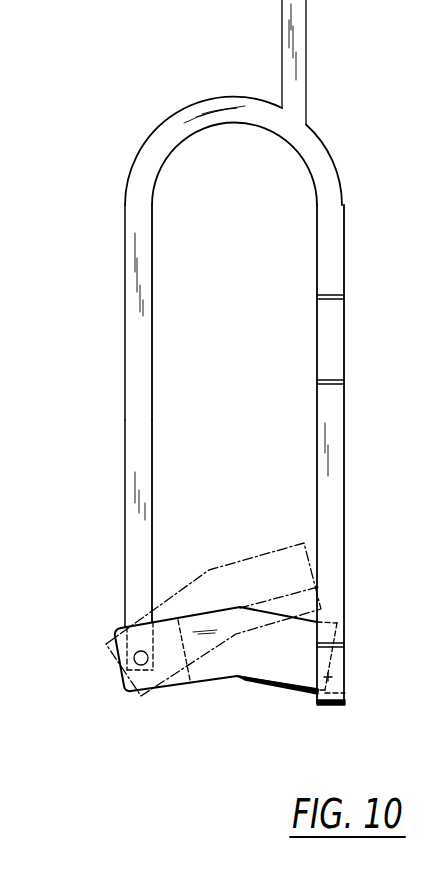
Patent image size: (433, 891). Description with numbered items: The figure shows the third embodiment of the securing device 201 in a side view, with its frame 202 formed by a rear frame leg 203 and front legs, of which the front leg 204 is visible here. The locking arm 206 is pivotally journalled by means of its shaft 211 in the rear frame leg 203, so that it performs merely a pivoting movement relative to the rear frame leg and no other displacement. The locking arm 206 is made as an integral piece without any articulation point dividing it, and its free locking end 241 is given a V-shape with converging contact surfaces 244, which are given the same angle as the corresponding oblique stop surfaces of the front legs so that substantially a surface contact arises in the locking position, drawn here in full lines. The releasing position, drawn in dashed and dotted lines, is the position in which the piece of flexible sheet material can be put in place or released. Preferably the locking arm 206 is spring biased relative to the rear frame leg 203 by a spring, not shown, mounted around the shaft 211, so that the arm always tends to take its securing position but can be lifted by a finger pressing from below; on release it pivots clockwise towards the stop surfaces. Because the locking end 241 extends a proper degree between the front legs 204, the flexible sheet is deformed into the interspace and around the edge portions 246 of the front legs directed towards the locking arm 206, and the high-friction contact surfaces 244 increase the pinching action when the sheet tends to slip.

The securing device 201 is at (114, 404).
The frame 202 is at (118, 287).
The rear frame leg 203 is at (137, 528).
The front leg 204 is at (332, 526).
The locking arm 206 is at (217, 662).
The shaft 211 is at (141, 666).
The free locking end 241 is at (348, 677).
The contact surfaces 244 is at (290, 681).
The edge portions 246 is at (312, 698).